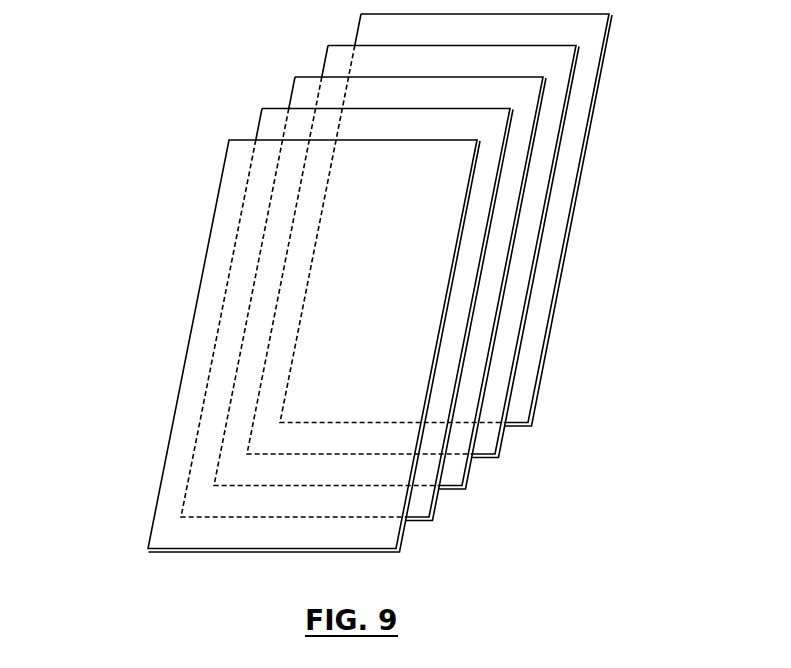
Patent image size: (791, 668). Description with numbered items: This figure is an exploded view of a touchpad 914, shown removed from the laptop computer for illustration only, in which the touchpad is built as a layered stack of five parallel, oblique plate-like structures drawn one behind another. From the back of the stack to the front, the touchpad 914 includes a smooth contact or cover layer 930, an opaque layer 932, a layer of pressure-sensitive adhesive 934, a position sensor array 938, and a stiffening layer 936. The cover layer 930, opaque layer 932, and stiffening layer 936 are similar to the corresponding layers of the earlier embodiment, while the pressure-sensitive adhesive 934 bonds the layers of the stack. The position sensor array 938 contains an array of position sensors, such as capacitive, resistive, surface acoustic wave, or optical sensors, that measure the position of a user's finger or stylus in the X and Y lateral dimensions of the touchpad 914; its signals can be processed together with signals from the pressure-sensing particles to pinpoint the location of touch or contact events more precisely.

The touchpad 914 is at (375, 283).
The cover layer 930 is at (568, 122).
The opaque layer 932 is at (533, 187).
The layer of pressure-sensitive adhesive 934 is at (498, 252).
The position sensor array 938 is at (455, 303).
The stiffening layer 936 is at (405, 370).